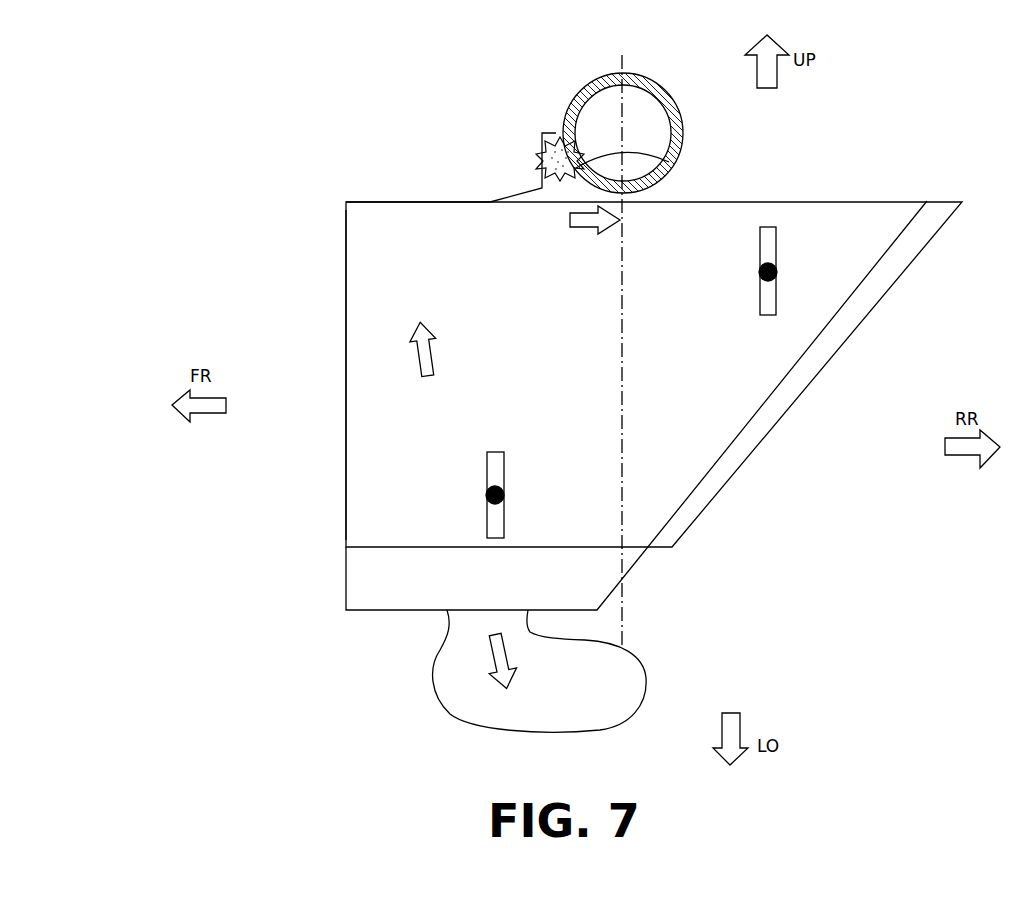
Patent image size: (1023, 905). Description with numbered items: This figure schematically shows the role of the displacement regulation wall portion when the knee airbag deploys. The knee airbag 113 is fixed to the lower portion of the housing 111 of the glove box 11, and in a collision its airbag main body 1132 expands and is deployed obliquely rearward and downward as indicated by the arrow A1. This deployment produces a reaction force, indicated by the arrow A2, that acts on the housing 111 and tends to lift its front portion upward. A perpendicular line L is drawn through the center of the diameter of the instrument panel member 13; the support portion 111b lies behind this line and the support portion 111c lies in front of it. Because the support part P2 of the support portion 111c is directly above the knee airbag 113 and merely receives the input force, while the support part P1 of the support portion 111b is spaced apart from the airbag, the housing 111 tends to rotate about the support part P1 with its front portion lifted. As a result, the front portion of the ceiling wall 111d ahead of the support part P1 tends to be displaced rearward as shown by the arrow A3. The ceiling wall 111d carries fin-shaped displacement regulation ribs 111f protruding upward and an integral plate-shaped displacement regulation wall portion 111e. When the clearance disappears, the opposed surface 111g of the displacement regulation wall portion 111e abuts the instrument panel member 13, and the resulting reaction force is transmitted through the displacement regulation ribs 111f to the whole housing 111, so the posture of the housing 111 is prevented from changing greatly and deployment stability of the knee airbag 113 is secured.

The glove box 11 is at (908, 190).
The instrument panel member 13 is at (662, 86).
The housing 111 is at (373, 279).
The support portion 111b is at (780, 298).
The support portion 111c is at (512, 522).
The ceiling wall 111d is at (392, 199).
The displacement regulation wall portion 111e is at (539, 126).
The displacement regulation ribs 111f is at (516, 181).
The opposed surface 111g is at (672, 158).
The knee airbag 113 is at (345, 575).
The airbag main body 1132 is at (489, 727).
The support part P1 is at (780, 263).
The support part P2 is at (512, 490).
The perpendicular line L is at (616, 119).
The arrow A1 is at (515, 662).
The arrow A2 is at (435, 348).
The arrow A3 is at (595, 231).